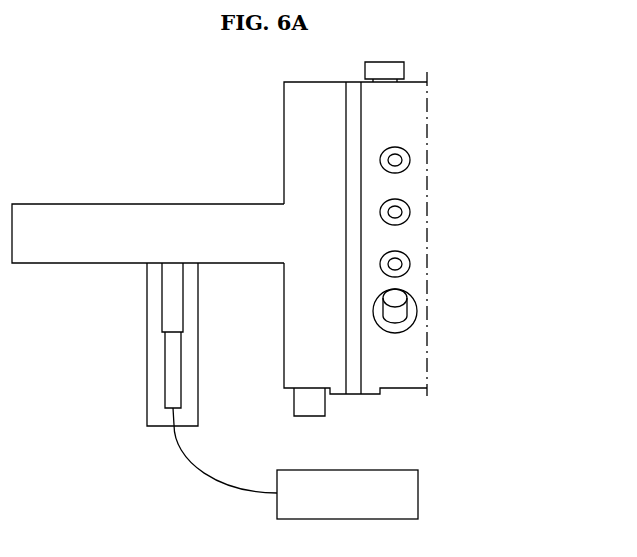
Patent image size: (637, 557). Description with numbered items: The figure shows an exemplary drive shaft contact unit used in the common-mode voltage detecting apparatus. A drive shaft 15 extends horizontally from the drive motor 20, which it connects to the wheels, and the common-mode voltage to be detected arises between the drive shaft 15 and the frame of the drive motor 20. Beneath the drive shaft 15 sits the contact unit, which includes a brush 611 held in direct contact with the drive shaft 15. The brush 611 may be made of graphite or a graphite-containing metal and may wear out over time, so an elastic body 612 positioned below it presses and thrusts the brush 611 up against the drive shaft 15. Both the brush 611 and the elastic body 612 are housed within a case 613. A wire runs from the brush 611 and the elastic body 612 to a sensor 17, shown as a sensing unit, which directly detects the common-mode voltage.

The drive shaft 15 is at (66, 212).
The drive motor 20 is at (292, 123).
The sensor 17 is at (418, 491).
The brush 611 is at (167, 303).
The elastic body 612 is at (172, 380).
The case 613 is at (147, 345).